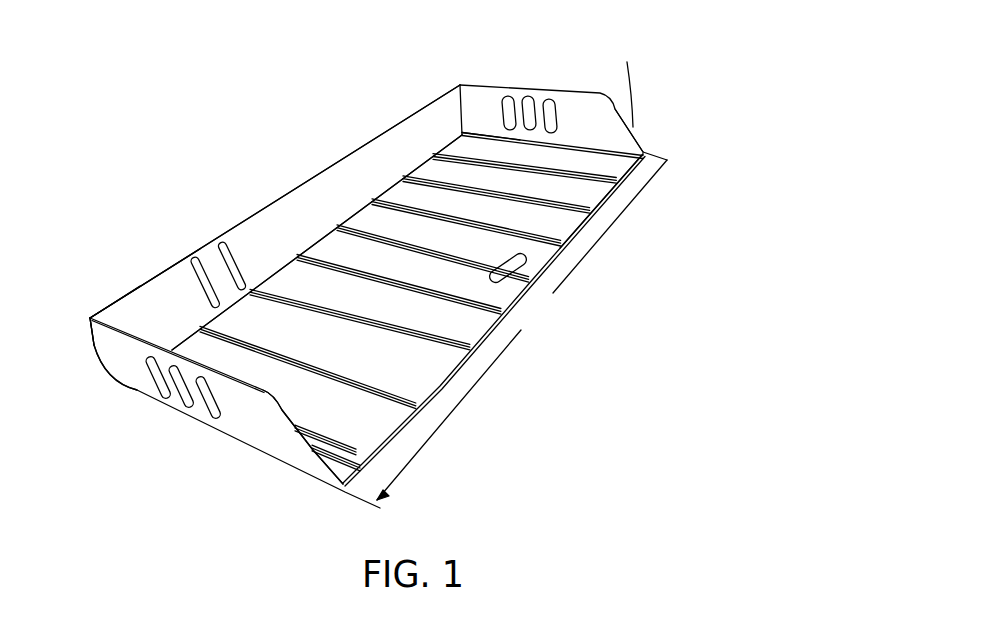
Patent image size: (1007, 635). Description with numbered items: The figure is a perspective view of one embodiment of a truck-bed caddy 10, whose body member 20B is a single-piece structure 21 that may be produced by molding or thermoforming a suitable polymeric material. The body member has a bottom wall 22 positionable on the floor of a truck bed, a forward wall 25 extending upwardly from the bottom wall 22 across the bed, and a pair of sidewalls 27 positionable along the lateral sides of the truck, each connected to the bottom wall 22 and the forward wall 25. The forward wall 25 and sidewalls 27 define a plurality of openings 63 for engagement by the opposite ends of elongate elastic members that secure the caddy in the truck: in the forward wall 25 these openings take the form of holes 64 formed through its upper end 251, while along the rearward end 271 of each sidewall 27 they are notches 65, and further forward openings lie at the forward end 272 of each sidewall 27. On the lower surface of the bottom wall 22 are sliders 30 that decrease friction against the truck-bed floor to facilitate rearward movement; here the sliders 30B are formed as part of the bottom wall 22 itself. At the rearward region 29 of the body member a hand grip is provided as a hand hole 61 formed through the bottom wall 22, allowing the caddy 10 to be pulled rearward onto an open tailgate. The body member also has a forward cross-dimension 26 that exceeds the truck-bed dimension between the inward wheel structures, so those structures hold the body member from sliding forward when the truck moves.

The caddy 10 is at (359, 282).
The body member 20B is at (357, 165).
The single-piece structure 21 is at (115, 310).
The bottom wall 22 is at (472, 336).
The forward wall 25 is at (317, 187).
The upper end of forward wall 251 is at (147, 297).
The forward cross-dimension 26 is at (505, 326).
The sidewalls 27 is at (570, 100).
The rearward end of sidewall 271 is at (312, 464).
The forward end of sidewall 272 is at (110, 350).
The rearward region of body member 29 is at (556, 259).
The sliders 30 is at (392, 406).
The sliders formed as part of bottom wall 30B is at (452, 186).
The hand hole 61 is at (548, 291).
The openings 63 is at (152, 372).
The holes 64 is at (234, 250).
The notches 65 is at (628, 125).